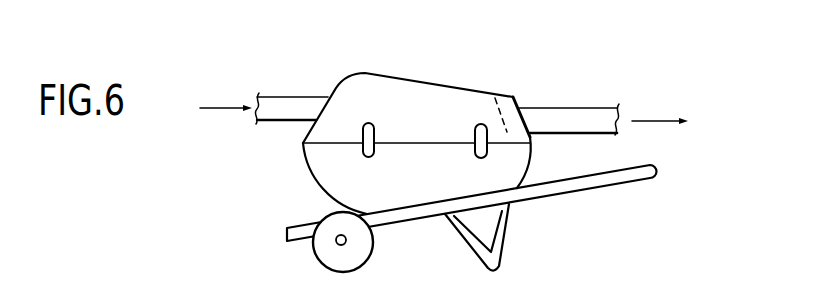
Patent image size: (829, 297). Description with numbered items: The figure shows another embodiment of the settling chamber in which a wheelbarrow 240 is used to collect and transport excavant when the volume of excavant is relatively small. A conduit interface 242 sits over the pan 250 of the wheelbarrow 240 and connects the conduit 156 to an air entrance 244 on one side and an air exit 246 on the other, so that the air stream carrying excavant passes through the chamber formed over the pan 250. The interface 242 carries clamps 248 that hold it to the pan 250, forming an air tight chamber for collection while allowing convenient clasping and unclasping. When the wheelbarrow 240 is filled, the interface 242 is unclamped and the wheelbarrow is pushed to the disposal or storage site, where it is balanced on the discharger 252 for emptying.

The wheelbarrow 240 is at (528, 41).
The conduit interface 242 is at (428, 97).
The air entrance 244 is at (322, 104).
The air exit 246 is at (527, 117).
The conduit 156 is at (592, 113).
The clamps 248 is at (361, 147).
The pan 250 is at (353, 177).
The discharger 252 is at (300, 242).